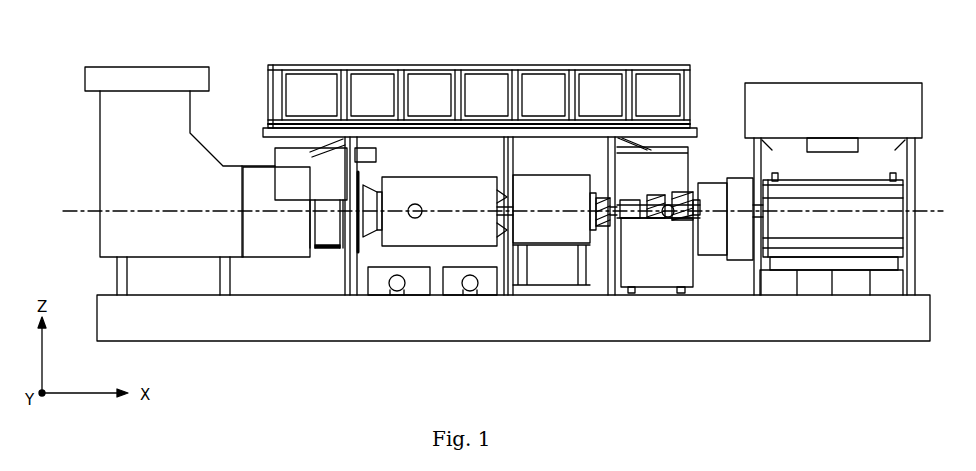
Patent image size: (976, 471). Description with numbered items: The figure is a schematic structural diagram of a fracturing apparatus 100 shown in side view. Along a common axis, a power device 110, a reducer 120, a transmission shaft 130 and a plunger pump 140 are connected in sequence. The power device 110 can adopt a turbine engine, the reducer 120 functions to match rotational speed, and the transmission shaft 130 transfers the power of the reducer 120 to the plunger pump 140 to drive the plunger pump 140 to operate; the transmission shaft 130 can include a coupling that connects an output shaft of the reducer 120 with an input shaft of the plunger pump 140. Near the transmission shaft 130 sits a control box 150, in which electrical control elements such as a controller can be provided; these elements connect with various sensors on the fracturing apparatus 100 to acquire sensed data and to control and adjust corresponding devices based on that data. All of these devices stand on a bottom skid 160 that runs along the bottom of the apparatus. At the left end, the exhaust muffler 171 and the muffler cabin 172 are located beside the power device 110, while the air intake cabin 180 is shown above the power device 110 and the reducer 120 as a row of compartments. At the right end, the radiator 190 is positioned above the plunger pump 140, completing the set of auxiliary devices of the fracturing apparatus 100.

The fracturing apparatus 100 is at (118, 34).
The power device 110 is at (452, 185).
The reducer 120 is at (560, 185).
The transmission shaft 130 is at (637, 210).
The plunger pump 140 is at (855, 190).
The control box 150 is at (658, 283).
The bottom skid 160 is at (438, 318).
The exhaust muffler 171 is at (195, 235).
The muffler cabin 172 is at (348, 278).
The air intake cabin 180 is at (428, 65).
The radiator 190 is at (823, 92).